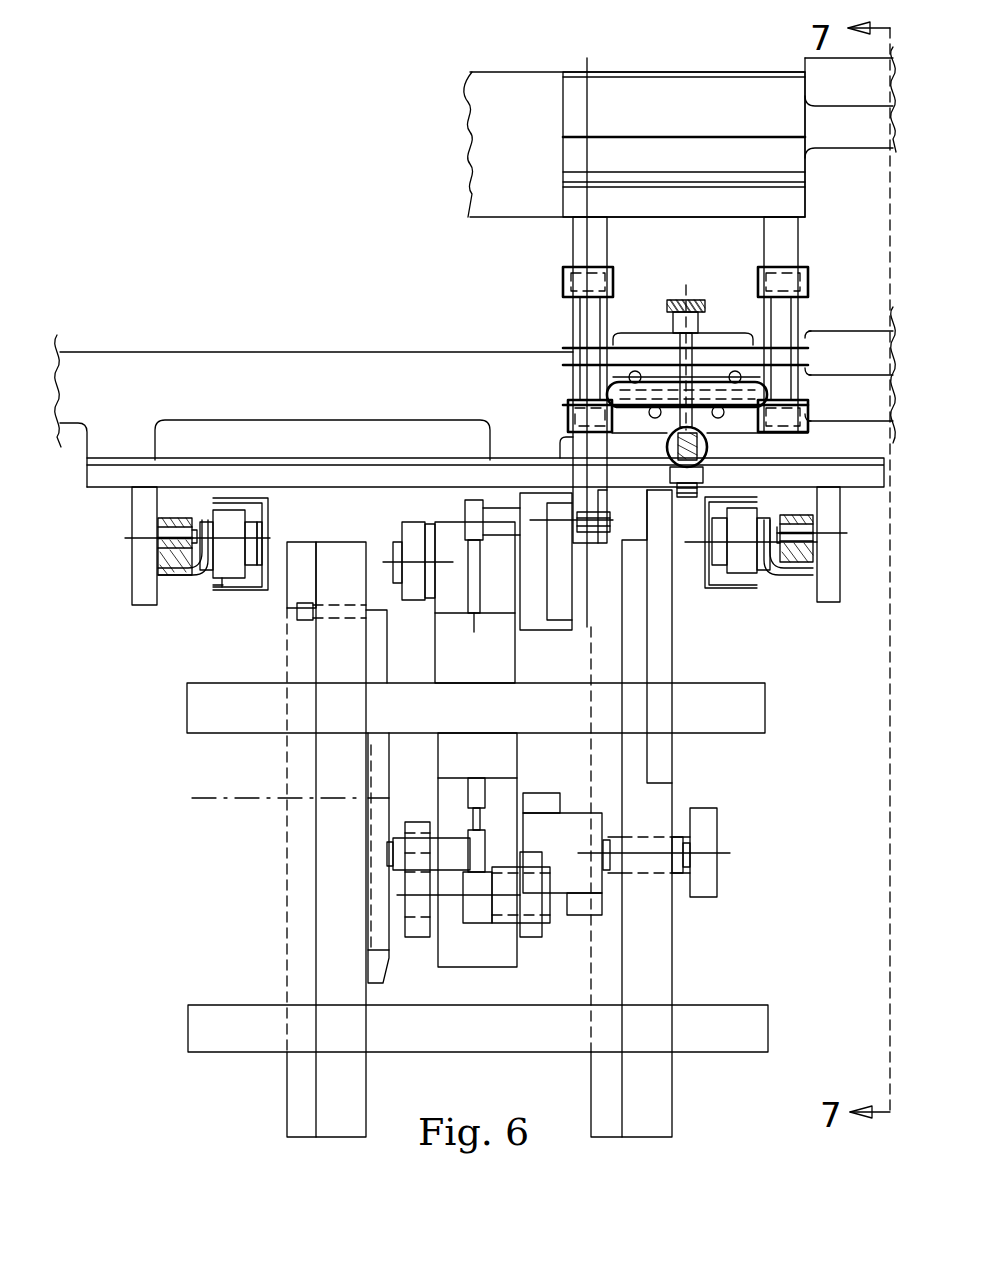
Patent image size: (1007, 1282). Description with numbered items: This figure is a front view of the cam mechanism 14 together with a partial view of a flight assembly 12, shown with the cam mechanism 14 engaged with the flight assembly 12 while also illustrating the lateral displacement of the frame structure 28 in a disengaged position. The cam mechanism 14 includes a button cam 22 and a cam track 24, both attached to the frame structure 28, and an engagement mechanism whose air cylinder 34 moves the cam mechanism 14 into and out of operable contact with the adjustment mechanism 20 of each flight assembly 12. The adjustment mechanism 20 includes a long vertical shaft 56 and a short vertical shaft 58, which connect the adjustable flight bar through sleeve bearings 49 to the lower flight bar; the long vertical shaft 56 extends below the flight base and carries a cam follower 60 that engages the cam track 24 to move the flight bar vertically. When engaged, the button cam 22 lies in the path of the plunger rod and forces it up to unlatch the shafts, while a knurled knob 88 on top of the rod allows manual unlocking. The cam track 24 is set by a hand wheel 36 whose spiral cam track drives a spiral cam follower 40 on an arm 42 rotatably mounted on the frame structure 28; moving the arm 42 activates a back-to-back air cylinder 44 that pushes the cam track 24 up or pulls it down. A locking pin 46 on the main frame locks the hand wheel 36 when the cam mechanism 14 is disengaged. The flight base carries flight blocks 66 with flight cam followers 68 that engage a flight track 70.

The flight assembly 12 is at (502, 232).
The short vertical shaft 58 is at (800, 233).
The long vertical shaft 56 is at (572, 250).
The sleeve bearings 49 is at (613, 290).
The knurled knob 88 is at (703, 275).
The adjustment mechanism 20 is at (738, 448).
The button cam 22 is at (683, 500).
The flight blocks 66 is at (132, 563).
The flight cam followers 68 is at (222, 588).
The flight track 70 is at (240, 590).
The cam mechanism 14 is at (350, 530).
The locking pin 46 is at (297, 604).
The hand wheel 36 is at (387, 637).
The cam track 24 is at (555, 628).
The cam follower 60 is at (560, 542).
The frame structure 28 is at (677, 1100).
The arm 42 is at (410, 937).
The spiral cam follower 40 is at (381, 840).
The back-to-back air cylinder 44 is at (484, 762).
The air cylinder 34 is at (588, 915).